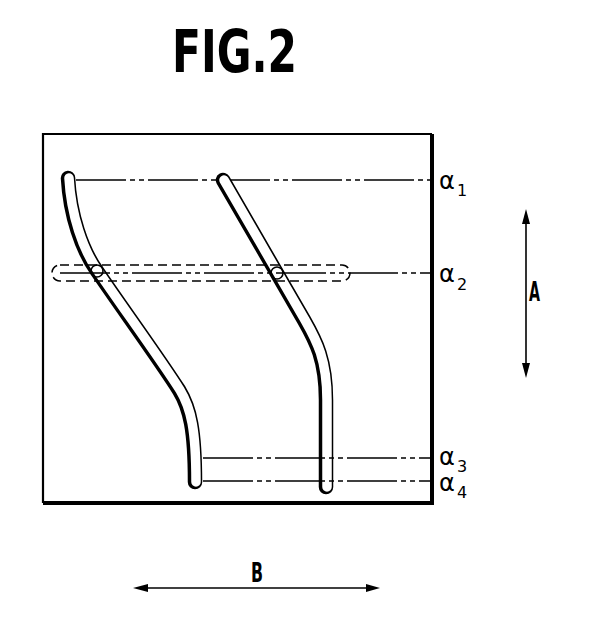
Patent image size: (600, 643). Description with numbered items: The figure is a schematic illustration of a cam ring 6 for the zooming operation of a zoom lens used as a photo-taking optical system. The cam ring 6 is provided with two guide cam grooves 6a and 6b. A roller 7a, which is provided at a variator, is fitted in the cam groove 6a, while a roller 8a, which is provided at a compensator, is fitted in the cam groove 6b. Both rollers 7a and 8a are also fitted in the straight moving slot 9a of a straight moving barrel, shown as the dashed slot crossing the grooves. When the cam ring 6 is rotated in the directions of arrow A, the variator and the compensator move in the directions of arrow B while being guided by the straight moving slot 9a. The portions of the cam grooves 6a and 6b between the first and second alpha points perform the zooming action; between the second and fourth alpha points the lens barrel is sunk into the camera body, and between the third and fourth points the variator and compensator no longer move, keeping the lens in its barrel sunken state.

The cam ring 6 is at (428, 155).
The guide cam groove 6a is at (167, 376).
The guide cam groove 6b is at (313, 370).
The roller 7a is at (90, 280).
The roller 8a is at (272, 283).
The straight moving slot 9a is at (317, 265).